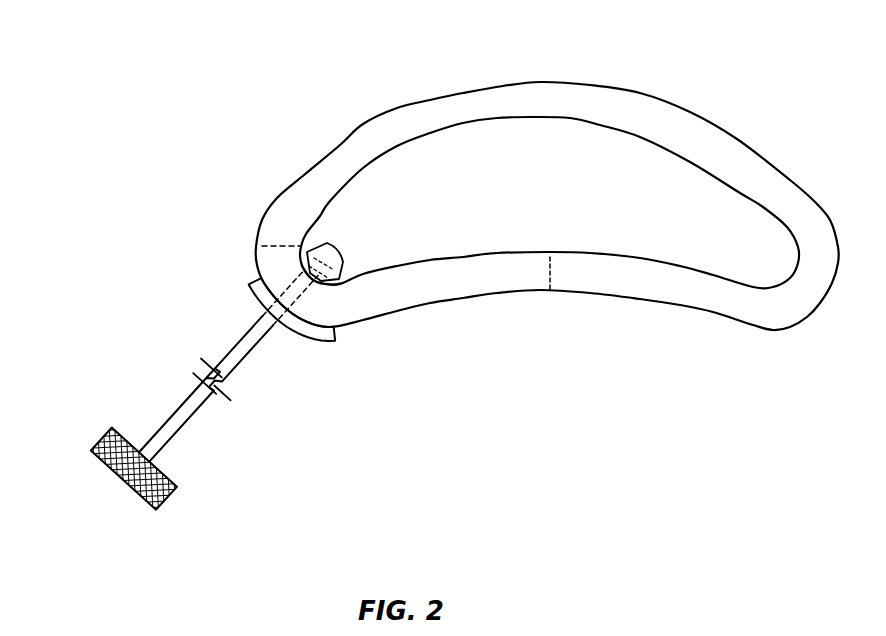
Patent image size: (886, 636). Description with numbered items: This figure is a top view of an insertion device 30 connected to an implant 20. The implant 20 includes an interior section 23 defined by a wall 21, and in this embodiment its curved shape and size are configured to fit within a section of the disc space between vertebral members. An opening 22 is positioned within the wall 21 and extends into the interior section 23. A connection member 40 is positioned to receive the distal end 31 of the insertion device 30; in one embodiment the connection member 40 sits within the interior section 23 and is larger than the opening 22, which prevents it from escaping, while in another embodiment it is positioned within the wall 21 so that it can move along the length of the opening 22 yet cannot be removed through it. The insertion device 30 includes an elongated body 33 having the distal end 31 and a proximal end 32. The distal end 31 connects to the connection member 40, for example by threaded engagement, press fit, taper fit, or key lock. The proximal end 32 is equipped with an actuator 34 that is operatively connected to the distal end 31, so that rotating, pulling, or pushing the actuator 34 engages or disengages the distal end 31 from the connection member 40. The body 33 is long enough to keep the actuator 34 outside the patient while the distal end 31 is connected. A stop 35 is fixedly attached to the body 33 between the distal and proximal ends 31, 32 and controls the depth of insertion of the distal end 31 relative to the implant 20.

The implant 20 is at (385, 76).
The wall 21 is at (713, 150).
The opening 22 is at (462, 318).
The interior section 23 is at (545, 168).
The insertion device 30 is at (138, 326).
The distal end 31 is at (347, 266).
The proximal end 32 is at (150, 507).
The body 33 is at (188, 424).
The actuator 34 is at (101, 437).
The stop 35 is at (250, 283).
The connection member 40 is at (317, 246).